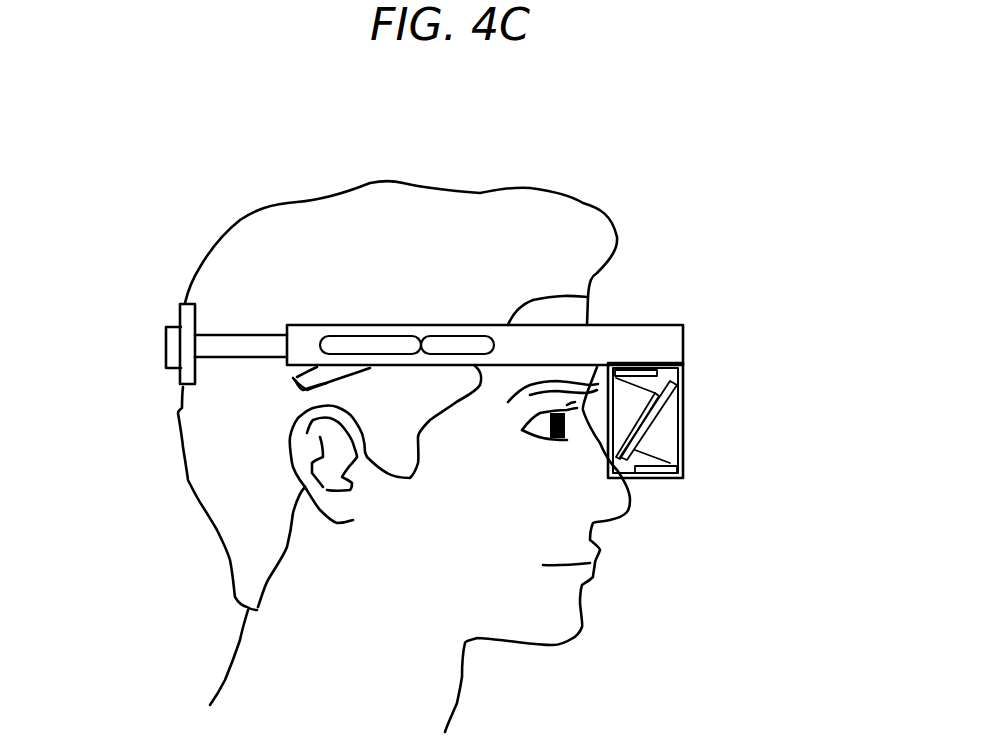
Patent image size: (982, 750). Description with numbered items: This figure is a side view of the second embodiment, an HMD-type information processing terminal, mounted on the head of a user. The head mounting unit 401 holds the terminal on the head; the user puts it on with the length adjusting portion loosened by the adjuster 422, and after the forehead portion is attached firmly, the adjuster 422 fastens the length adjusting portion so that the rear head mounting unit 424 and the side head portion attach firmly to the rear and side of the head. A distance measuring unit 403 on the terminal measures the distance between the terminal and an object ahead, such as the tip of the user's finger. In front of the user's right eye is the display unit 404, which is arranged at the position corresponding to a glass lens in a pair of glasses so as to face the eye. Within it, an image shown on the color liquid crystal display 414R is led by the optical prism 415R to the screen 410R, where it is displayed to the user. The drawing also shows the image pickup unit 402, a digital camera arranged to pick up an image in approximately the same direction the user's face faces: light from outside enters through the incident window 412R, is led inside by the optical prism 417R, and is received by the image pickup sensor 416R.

The head mounting unit 401 is at (552, 104).
The adjuster 422 is at (383, 343).
The rear head mounting unit 424 is at (563, 343).
The distance measuring unit 403 is at (632, 335).
The display unit 404 is at (693, 256).
The color liquid crystal display 414R is at (650, 371).
The optical prism 415R is at (628, 400).
The optical prism 417R is at (668, 428).
The incident window 412R is at (684, 448).
The image pickup sensor 416R is at (660, 474).
The screen 410R is at (607, 440).
The image pickup unit 402 is at (832, 402).